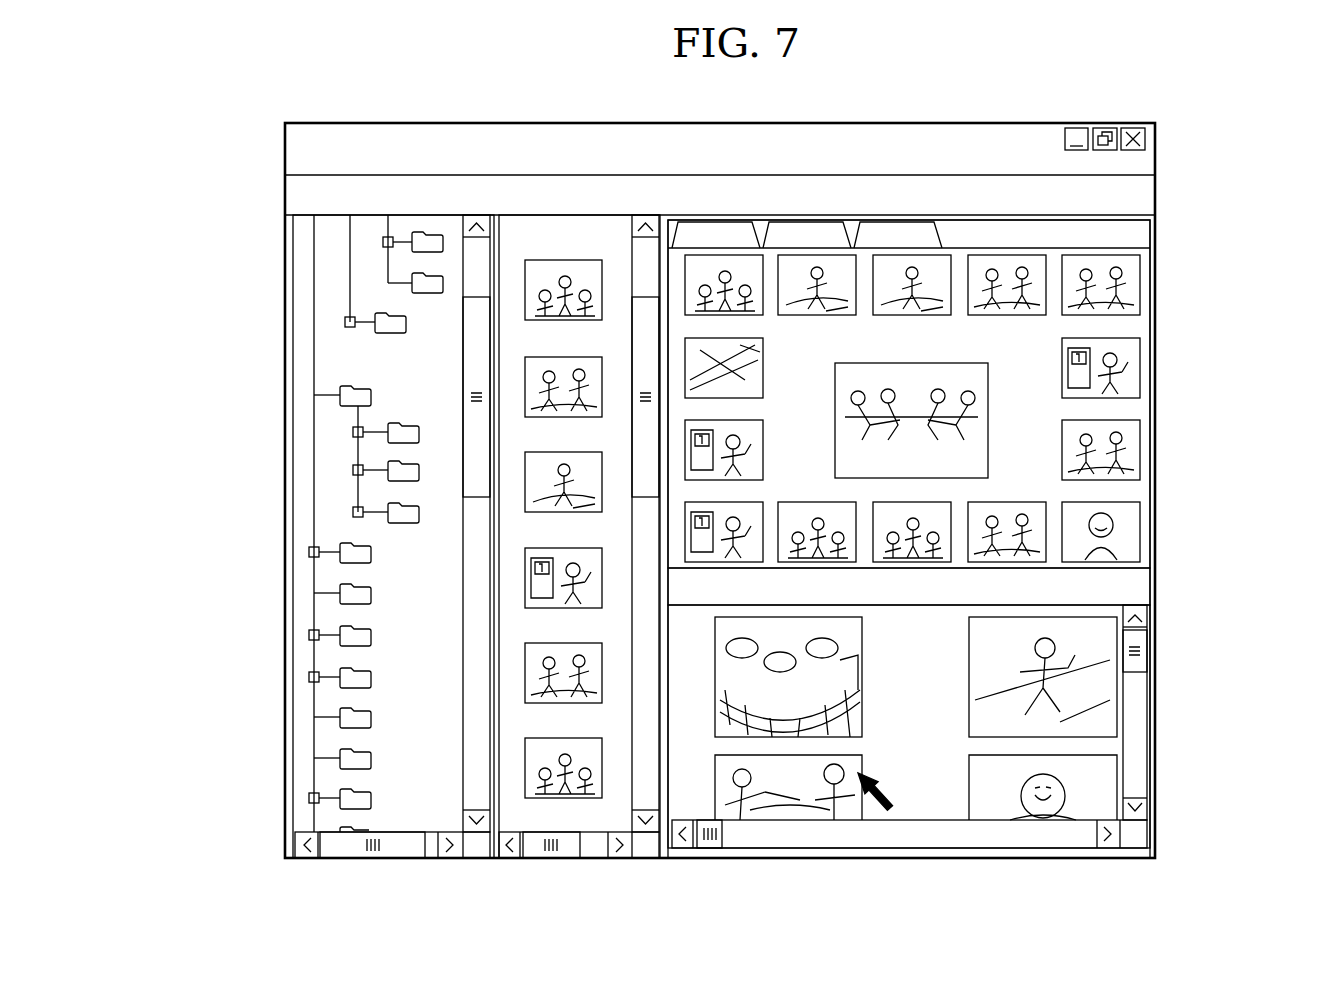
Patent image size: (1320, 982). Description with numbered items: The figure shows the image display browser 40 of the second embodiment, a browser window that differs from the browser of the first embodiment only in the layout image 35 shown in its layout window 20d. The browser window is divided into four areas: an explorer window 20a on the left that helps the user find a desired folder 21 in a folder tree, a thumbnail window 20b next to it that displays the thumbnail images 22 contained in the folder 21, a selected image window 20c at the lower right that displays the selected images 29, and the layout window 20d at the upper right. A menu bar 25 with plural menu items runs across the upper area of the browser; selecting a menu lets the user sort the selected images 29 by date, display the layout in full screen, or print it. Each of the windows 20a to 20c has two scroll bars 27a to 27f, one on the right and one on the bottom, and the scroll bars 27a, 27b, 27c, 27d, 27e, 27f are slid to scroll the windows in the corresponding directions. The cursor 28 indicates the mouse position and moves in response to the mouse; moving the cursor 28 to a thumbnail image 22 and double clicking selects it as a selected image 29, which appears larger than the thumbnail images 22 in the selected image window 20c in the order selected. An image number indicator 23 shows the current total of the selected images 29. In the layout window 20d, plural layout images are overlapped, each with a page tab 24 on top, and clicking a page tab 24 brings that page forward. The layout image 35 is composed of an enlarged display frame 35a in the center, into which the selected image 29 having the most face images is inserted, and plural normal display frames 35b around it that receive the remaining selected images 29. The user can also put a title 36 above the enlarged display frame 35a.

The image display browser 40 is at (272, 125).
The explorer window 20a is at (318, 536).
The thumbnail window 20b is at (611, 491).
The selected image window 20c is at (982, 751).
The layout window 20d is at (989, 491).
The folder 21 is at (418, 251).
The thumbnail image 22 is at (565, 739).
The image number indicator 23 is at (1138, 590).
The page tab 24 is at (784, 248).
The menu bar 25 is at (1026, 203).
The scroll bar 27a is at (473, 318).
The scroll bar 27b is at (325, 848).
The scroll bar 27c is at (641, 306).
The scroll bar 27d is at (566, 849).
The scroll bar 27e is at (1140, 775).
The scroll bar 27f is at (710, 838).
The cursor 28 is at (889, 798).
The selected image 29 is at (972, 768).
The layout image 35 is at (989, 326).
The enlarged display frame 35a is at (988, 406).
The normal display frame 35b is at (1137, 556).
The title 36 is at (862, 326).